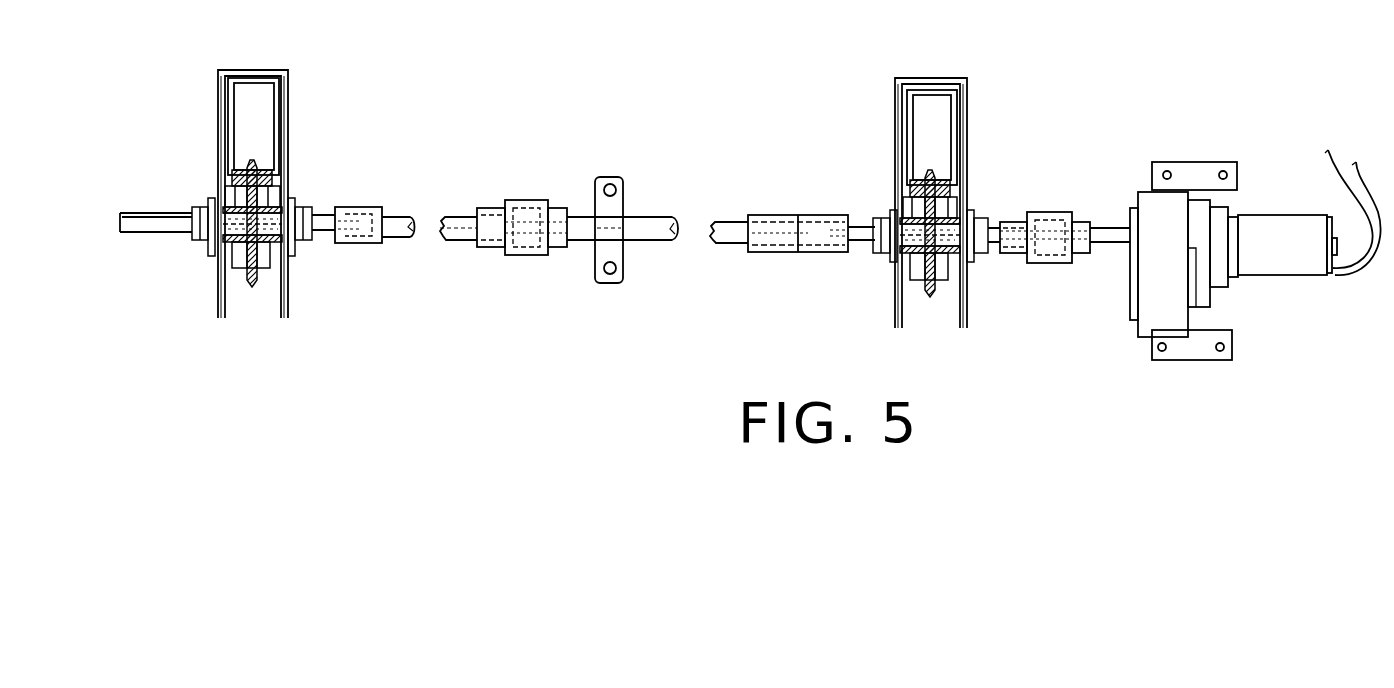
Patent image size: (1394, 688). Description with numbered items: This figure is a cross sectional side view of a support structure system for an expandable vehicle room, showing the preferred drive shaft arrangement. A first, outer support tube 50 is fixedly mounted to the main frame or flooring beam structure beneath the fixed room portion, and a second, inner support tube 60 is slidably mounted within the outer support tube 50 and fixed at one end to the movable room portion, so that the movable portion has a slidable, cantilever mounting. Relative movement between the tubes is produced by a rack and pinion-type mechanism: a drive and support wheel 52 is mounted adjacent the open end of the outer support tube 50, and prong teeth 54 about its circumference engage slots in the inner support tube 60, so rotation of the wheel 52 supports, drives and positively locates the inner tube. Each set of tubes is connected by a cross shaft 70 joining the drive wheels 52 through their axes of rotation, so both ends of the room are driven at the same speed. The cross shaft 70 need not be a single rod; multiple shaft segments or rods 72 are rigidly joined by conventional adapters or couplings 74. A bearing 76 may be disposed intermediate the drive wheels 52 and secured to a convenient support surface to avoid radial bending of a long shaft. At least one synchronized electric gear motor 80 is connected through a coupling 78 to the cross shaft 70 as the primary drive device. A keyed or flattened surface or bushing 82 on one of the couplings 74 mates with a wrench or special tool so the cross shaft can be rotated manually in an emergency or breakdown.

The outer support tube 50 is at (217, 102).
The drive and support wheel 52 is at (262, 272).
The prong teeth 54 is at (253, 280).
The inner support tube 60 is at (272, 100).
The cross shaft 70 is at (460, 188).
The shaft segments 72 is at (140, 228).
The couplings 74 is at (360, 210).
The bearing 76 is at (610, 282).
The coupling 78 is at (1017, 222).
The motor 80 is at (1283, 263).
The keyed surface 82 is at (556, 255).